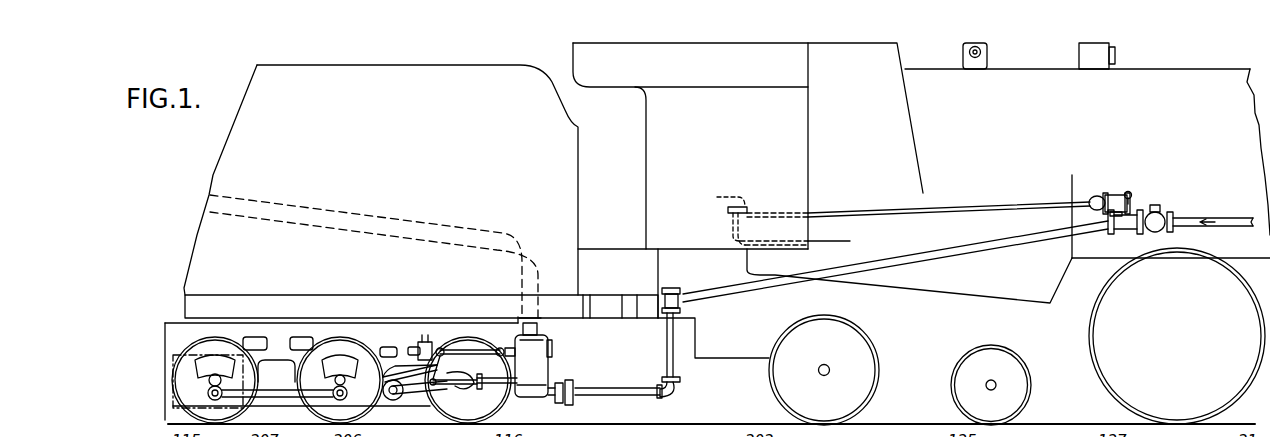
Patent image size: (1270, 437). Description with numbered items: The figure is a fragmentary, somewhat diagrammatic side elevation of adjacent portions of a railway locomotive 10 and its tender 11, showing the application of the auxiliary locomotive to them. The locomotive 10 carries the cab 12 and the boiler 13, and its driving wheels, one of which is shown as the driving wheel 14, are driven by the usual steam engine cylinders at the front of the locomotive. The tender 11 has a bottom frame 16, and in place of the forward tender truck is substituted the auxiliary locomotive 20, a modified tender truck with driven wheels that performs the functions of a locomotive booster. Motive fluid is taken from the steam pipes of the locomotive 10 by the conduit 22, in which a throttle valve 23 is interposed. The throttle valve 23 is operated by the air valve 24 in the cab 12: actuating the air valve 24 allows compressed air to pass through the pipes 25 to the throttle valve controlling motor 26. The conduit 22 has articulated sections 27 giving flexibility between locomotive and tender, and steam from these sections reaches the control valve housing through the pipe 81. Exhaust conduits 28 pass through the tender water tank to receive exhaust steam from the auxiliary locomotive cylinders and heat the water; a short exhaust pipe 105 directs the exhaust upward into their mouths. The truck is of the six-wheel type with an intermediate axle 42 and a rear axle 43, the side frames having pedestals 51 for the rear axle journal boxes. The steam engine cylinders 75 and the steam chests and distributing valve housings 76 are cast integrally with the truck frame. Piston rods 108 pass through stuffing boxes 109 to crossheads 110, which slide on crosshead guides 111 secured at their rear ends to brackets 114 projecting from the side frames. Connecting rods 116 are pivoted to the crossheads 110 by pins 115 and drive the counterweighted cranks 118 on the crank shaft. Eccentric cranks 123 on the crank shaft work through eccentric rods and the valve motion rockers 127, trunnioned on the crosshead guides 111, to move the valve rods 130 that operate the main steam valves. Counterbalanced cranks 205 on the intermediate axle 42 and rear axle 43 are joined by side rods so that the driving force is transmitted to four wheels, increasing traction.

The railway locomotive 10 is at (1040, 77).
The tender 11 is at (565, 201).
The cab 12 is at (790, 118).
The boiler 13 is at (1203, 78).
The driving wheel 14 is at (1102, 326).
The bottom frame 16 is at (262, 303).
The auxiliary locomotive 20 is at (163, 327).
The conduit 22 is at (913, 257).
The throttle valve 23 is at (1123, 220).
The air valve 24 is at (750, 208).
The pipes 25 is at (888, 214).
The throttle valve controlling motor 26 is at (1102, 186).
The articulated sections 27 is at (666, 360).
The exhaust conduits 28 is at (405, 218).
The intermediate axle 42 is at (340, 372).
The rear axle 43 is at (208, 379).
The pedestals 51 is at (172, 372).
The steam engine cylinders 75 is at (543, 391).
The steam chests and distributing valve housings 76 is at (553, 337).
The pipe 81 is at (563, 384).
The exhaust pipe 105 is at (540, 317).
The piston rods 108 is at (532, 357).
The stuffing boxes 109 is at (498, 394).
The crossheads 110 is at (488, 394).
The crosshead guides 111 is at (470, 345).
The brackets 114 is at (416, 343).
The pins 115 is at (458, 373).
The connecting rods 116 is at (459, 390).
The counterweighted cranks 118 is at (395, 376).
The eccentric cranks 123 is at (398, 392).
The valve motion rockers 127 is at (442, 347).
The valve rods 130 is at (465, 313).
The counterbalanced cranks 205 is at (229, 356).